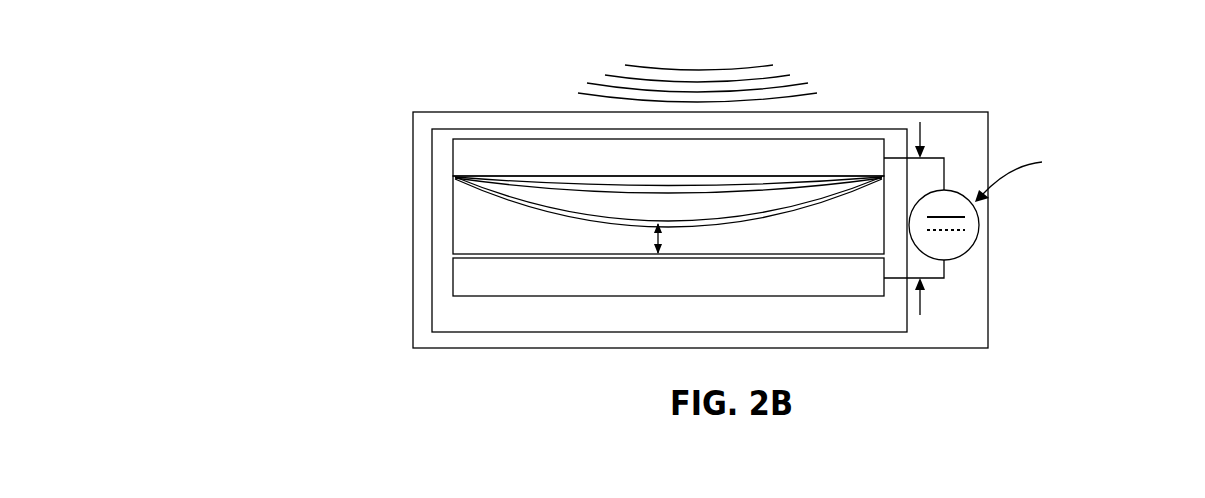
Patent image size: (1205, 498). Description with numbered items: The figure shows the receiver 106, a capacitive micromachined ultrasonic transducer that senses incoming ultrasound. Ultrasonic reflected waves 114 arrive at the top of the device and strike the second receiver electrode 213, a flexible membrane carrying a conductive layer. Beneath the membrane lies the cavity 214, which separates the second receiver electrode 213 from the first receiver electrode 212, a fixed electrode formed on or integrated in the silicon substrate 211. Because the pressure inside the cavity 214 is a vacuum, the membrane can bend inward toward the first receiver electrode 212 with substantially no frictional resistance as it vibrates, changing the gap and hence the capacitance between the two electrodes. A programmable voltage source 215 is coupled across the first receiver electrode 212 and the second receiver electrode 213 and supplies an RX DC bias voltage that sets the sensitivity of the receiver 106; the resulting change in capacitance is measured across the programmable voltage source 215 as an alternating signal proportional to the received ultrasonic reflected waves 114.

The receiver 106 is at (250, 34).
The ultrasonic reflected waves 114 is at (800, 65).
The substrate 211 is at (453, 318).
The first receiver electrode 212 is at (453, 275).
The second receiver electrode 213 is at (453, 152).
The cavity 214 is at (453, 210).
The programmable voltage source 215 is at (980, 227).